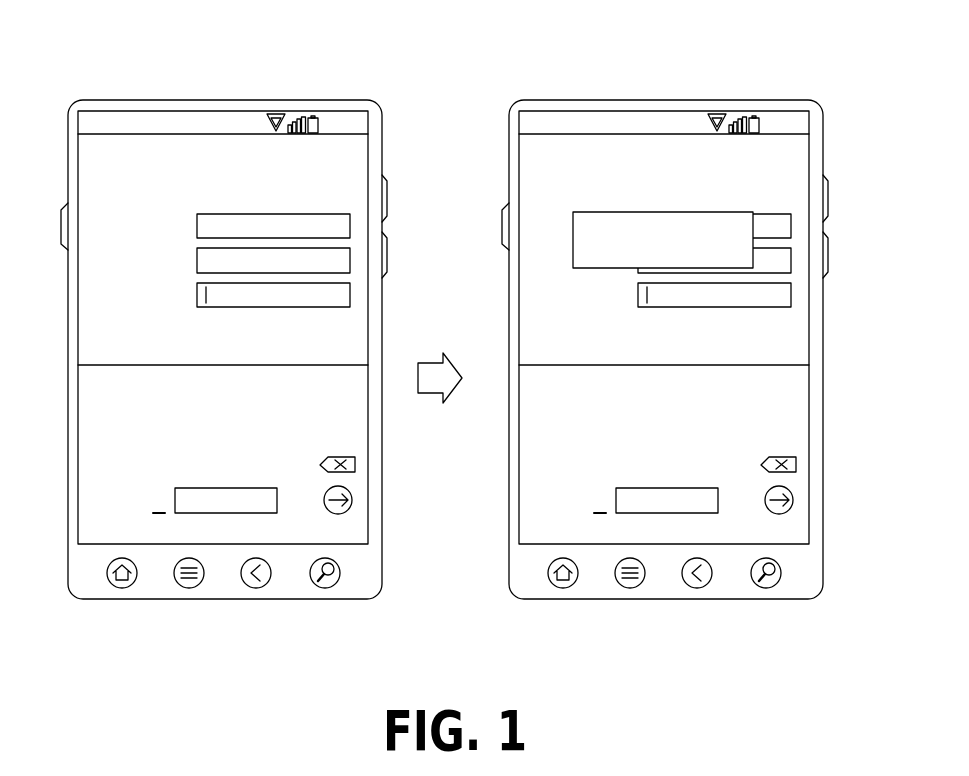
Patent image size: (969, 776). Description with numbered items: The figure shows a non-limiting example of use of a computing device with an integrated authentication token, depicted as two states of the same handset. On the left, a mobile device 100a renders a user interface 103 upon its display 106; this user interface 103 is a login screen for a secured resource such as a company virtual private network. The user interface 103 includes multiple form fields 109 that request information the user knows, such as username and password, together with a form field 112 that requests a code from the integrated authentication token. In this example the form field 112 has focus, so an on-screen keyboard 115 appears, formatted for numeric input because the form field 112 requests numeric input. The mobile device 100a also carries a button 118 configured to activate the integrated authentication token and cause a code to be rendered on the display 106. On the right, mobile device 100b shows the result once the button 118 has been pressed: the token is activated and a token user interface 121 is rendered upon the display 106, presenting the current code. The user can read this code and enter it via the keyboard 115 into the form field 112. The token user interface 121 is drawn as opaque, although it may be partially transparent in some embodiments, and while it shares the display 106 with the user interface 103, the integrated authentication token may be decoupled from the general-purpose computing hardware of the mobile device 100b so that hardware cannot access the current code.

The mobile device 100a is at (244, 345).
The mobile device 100b is at (696, 380).
The user interface 103 is at (265, 301).
The display 106 is at (209, 110).
The form fields 109 is at (333, 225).
The form field 112 is at (250, 292).
The on-screen keyboard 115 is at (350, 430).
The button 118 is at (60, 220).
The token user interface 121 is at (731, 240).